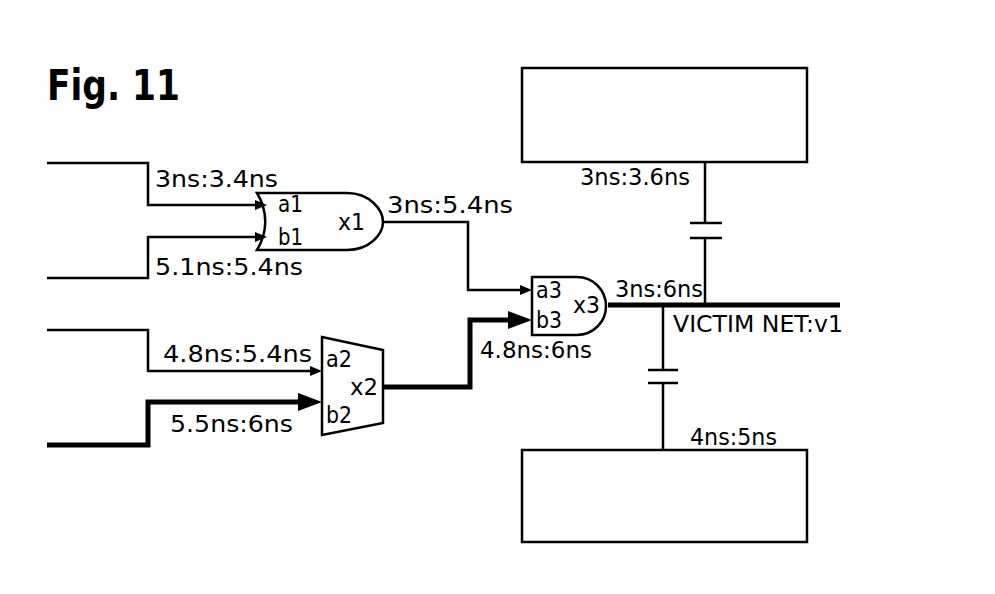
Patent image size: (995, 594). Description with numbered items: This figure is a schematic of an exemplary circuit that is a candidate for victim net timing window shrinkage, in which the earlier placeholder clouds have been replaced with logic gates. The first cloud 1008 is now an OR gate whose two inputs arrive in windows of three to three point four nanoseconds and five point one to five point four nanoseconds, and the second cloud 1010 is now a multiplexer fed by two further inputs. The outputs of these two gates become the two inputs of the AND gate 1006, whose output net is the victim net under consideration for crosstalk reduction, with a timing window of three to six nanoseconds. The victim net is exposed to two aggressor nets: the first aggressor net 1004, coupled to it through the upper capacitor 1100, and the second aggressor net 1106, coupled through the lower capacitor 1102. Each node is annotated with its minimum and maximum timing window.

The aggressor net n1 1004 is at (693, 141).
The AND gate 1006 is at (567, 277).
The logic gate replacing cloud 1008 is at (332, 193).
The logic gate replacing cloud 1010 is at (353, 432).
The capacitor 1100 is at (713, 223).
The capacitor 1102 is at (674, 384).
The aggressor net n2 1106 is at (693, 520).